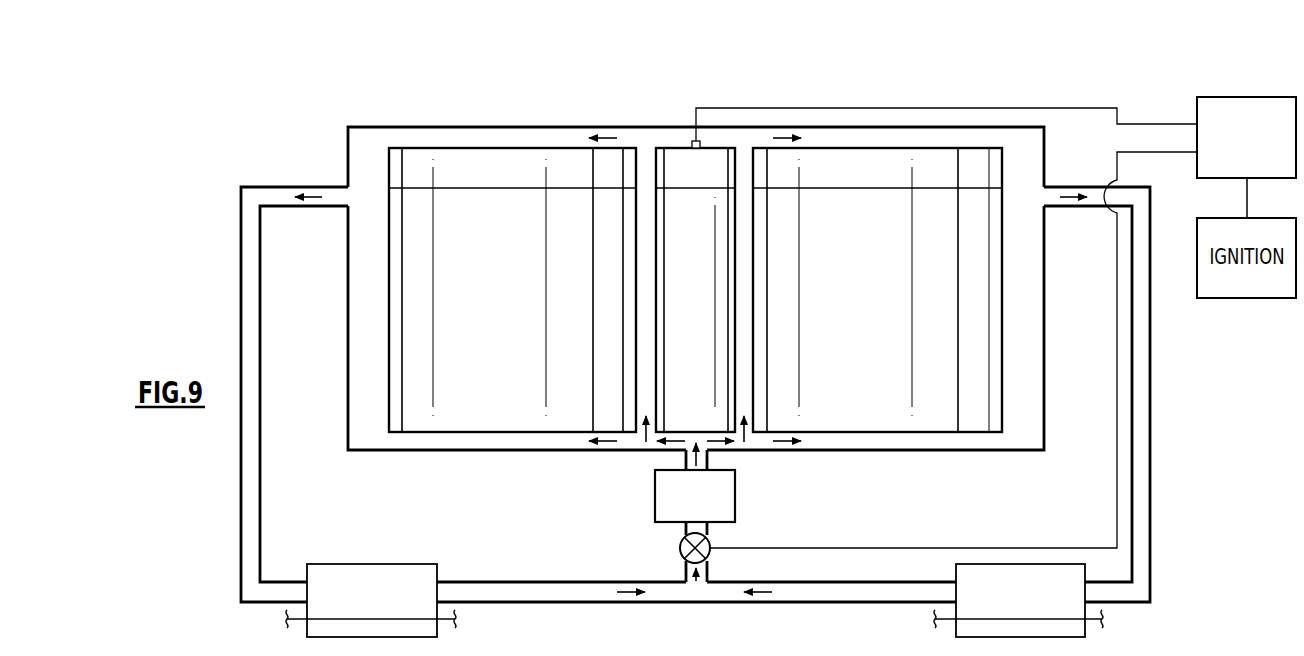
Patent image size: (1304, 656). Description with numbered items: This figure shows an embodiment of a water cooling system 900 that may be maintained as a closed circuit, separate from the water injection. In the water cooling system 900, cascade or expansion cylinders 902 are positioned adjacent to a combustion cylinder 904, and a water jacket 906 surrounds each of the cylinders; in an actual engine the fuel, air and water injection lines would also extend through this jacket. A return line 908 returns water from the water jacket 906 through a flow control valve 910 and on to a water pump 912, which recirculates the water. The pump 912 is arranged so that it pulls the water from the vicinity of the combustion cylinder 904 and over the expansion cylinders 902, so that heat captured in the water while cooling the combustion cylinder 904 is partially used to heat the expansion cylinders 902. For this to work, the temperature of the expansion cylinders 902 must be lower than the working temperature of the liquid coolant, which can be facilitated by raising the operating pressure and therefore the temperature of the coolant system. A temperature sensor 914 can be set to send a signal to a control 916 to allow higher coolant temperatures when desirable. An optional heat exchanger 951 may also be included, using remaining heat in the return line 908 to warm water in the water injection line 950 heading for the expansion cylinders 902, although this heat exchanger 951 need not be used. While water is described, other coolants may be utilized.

The water cooling system 900 is at (462, 490).
The cascade or expansion cylinders 902 is at (474, 218).
The combustion cylinder 904 is at (687, 215).
The water jacket 906 is at (365, 440).
The return line 908 is at (246, 478).
The flow control valve 910 is at (680, 551).
The water pump 912 is at (732, 500).
The temperature sensor 914 is at (692, 143).
The control 916 is at (1267, 147).
The water injection line 950 is at (298, 619).
The heat exchanger 951 is at (307, 564).